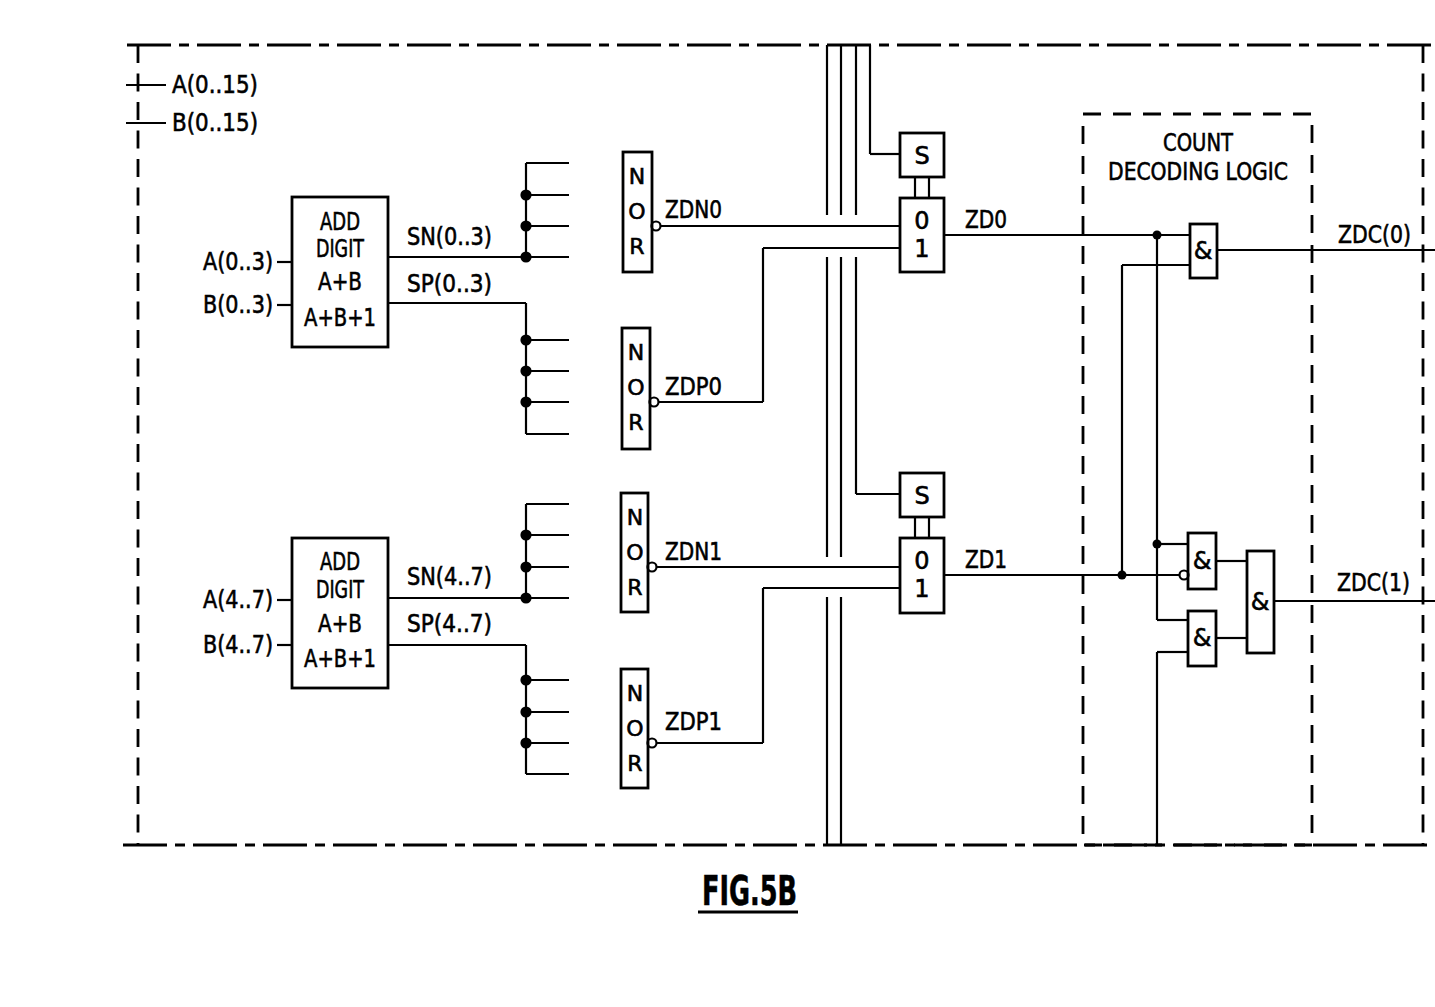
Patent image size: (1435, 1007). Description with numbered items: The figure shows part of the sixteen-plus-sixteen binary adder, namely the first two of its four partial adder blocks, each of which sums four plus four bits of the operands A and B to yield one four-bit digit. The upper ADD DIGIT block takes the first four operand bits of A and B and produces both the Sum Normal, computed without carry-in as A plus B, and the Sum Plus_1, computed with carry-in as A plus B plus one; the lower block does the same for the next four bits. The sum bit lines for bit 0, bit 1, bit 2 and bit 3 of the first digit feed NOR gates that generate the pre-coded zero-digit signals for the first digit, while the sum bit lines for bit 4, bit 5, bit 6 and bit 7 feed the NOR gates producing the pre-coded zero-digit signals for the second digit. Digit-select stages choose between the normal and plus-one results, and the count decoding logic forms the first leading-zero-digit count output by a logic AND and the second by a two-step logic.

The sum digit bit 0 input line 0 is at (623, 163).
The sum digit bit 1 input line 1 is at (623, 195).
The sum digit bit 2 input line 2 is at (623, 226).
The sum digit bit 3 input line 3 is at (623, 257).
The sum digit bit 4 input line 4 is at (621, 504).
The sum digit bit 5 input line 5 is at (621, 535).
The sum digit bit 6 input line 6 is at (621, 567).
The sum digit bit 7 input line 7 is at (621, 598).